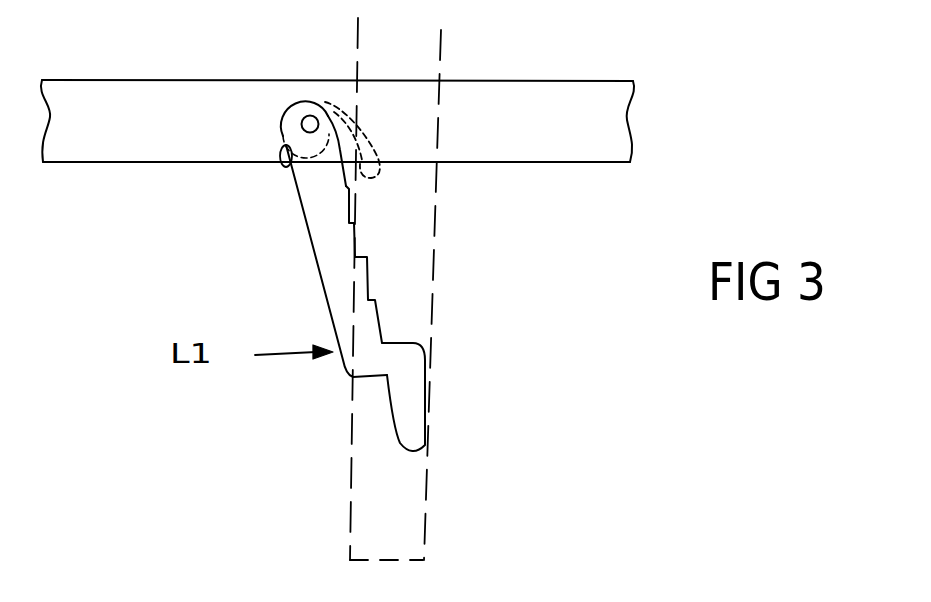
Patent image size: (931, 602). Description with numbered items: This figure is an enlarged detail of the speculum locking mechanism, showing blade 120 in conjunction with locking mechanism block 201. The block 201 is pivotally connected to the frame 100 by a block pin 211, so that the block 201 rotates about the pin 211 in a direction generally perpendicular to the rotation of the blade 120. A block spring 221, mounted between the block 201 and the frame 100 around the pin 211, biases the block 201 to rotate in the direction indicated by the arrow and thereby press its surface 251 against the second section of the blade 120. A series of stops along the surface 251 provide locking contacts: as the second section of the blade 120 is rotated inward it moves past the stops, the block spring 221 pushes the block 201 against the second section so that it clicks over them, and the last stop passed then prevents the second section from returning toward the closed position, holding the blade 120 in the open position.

The frame 100 is at (597, 145).
The blade 120 is at (402, 497).
The block 201 is at (312, 243).
The block pin 211 is at (310, 117).
The block spring 221 is at (362, 130).
The surface 251 is at (368, 277).